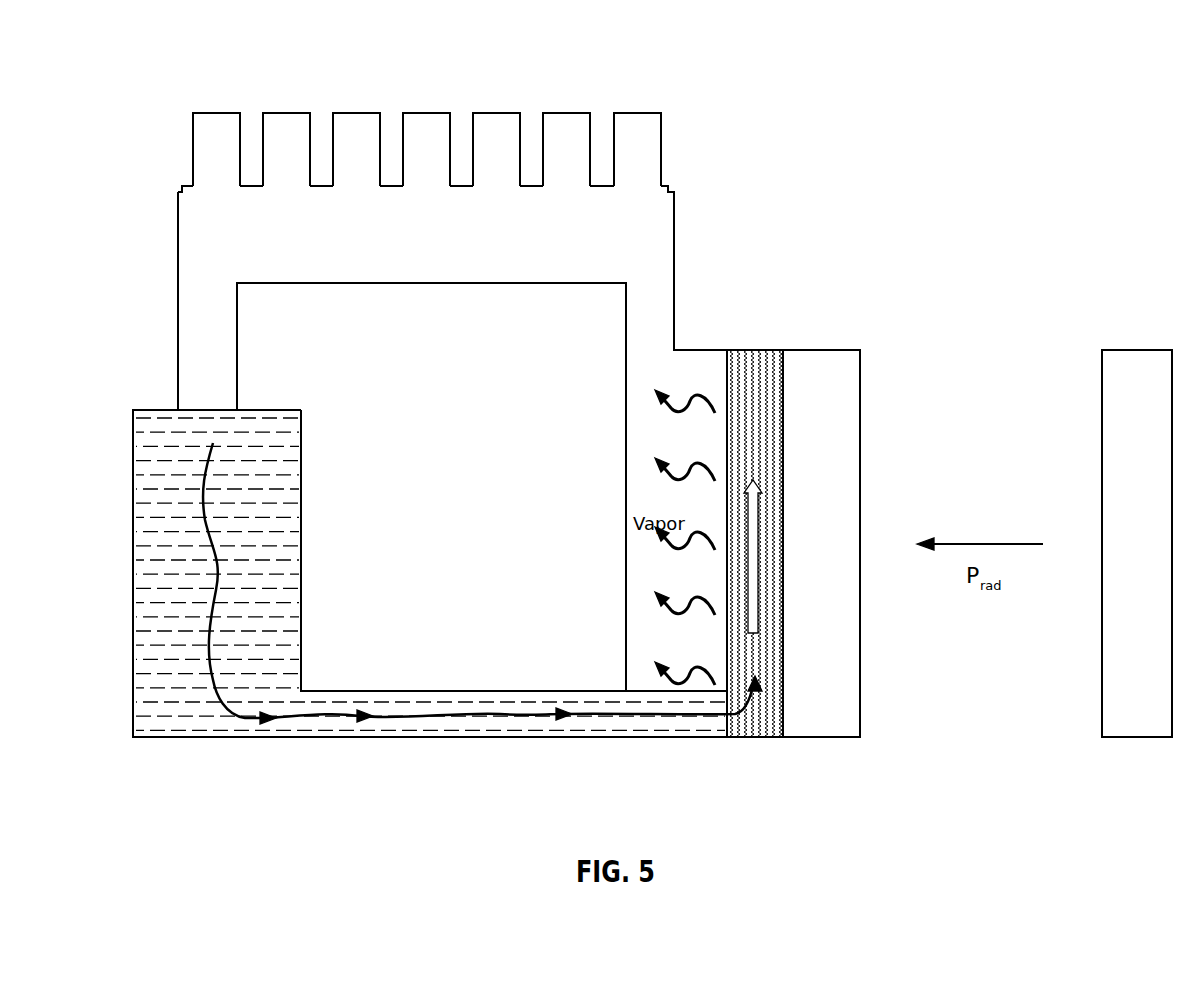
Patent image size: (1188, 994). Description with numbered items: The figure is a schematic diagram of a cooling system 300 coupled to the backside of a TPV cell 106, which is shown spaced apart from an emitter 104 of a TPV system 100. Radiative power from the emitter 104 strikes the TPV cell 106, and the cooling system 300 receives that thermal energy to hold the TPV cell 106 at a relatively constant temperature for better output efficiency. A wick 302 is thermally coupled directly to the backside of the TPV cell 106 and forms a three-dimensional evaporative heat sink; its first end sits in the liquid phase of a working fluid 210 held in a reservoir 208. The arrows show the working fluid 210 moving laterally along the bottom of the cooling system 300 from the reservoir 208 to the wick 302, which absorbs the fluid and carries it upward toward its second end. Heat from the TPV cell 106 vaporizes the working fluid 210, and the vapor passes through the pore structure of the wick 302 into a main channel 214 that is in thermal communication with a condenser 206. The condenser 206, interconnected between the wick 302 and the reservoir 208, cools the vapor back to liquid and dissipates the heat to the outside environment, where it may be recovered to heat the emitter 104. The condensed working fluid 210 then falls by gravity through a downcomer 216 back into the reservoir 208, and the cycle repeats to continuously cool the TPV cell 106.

The TPV system 100 is at (963, 331).
The emitter 104 is at (1142, 350).
The TPV cell 106 is at (852, 398).
The condenser 206 is at (427, 128).
The reservoir 208 is at (133, 478).
The working fluid 210 is at (170, 558).
The main channel 214 is at (663, 232).
The downcomer 216 is at (188, 289).
The cooling system 300 is at (745, 92).
The wick 302 is at (765, 355).